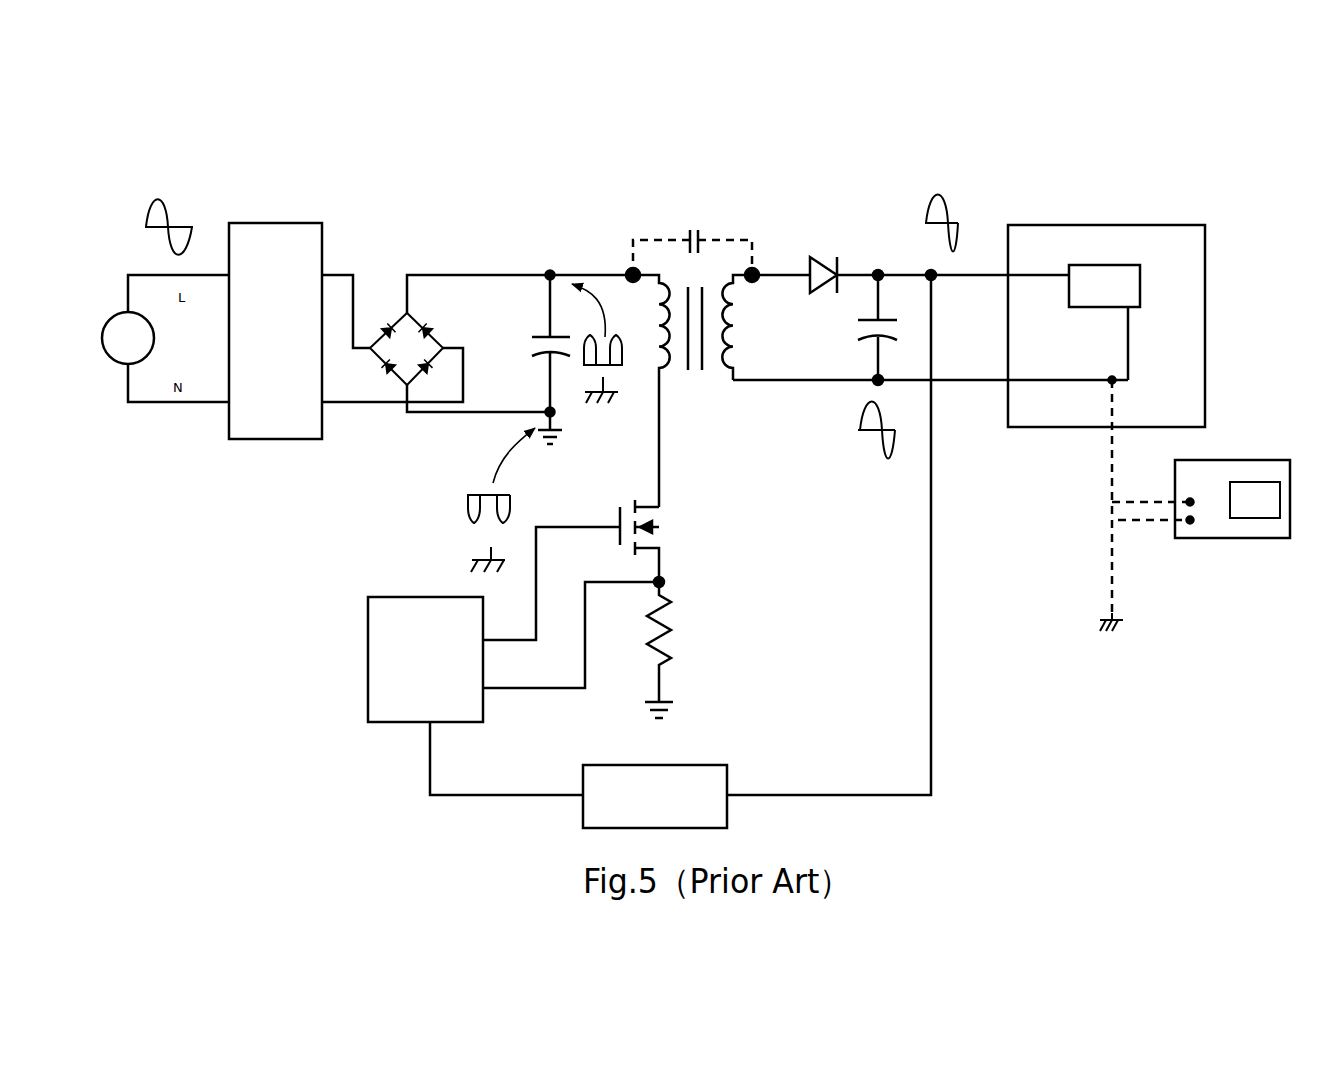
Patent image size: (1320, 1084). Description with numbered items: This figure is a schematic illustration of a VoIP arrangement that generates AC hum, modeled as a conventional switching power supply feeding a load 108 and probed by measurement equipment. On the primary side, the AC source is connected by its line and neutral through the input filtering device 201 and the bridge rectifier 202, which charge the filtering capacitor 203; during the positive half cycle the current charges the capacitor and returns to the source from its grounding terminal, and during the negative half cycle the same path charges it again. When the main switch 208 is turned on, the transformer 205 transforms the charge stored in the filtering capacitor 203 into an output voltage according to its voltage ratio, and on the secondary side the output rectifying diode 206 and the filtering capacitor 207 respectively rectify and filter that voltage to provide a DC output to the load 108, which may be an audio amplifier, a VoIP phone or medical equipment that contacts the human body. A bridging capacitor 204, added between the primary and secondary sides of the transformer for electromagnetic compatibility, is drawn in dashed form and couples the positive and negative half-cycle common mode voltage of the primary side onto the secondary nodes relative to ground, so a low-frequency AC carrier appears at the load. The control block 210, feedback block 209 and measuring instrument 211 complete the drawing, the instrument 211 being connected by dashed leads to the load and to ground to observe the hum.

The input filtering device 201 is at (273, 216).
The bridge rectifier 202 is at (432, 259).
The filtering capacitor 203 is at (555, 256).
The bridging capacitor 204 is at (695, 216).
The transformer 205 is at (710, 381).
The output rectifying diode 206 is at (814, 248).
The filtering capacitor 207 is at (882, 256).
The main switch 208 is at (681, 513).
The feedback circuit 209 is at (748, 766).
The controller 210 is at (364, 665).
The load 108 is at (1115, 216).
The oscilloscope 211 is at (1243, 443).